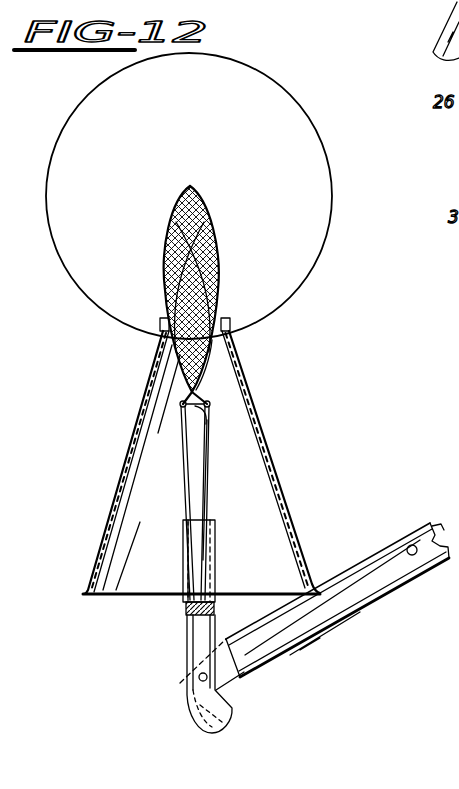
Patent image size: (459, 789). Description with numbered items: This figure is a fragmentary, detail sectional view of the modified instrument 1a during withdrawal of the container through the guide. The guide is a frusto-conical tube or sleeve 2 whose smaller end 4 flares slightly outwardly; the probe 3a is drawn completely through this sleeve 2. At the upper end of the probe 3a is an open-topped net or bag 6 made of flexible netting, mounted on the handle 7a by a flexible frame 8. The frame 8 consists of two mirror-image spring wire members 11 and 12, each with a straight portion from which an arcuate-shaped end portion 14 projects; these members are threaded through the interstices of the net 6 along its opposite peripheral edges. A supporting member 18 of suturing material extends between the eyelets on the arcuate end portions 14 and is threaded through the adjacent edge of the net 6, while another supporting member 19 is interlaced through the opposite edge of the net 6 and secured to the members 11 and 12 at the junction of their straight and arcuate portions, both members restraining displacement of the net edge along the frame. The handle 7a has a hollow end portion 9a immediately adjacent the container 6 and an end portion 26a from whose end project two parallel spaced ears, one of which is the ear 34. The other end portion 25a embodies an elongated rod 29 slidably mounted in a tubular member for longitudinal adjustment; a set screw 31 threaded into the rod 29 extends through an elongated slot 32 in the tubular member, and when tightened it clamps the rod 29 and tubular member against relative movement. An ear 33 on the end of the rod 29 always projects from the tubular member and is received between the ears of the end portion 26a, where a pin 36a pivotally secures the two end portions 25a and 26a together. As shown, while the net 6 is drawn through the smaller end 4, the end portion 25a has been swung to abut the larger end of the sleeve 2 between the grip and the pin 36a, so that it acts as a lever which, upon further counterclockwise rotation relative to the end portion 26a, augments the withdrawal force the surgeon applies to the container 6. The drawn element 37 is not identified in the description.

The instrument 1a is at (327, 462).
The sleeve 2 is at (262, 420).
The probe 3a is at (184, 566).
The smaller end 4 is at (228, 322).
The net or bag 6 is at (205, 303).
The handle 7a is at (370, 602).
The flexible frame 8 is at (215, 357).
The end portion 9a is at (216, 558).
The elongated member 11 is at (208, 472).
The elongated member 12 is at (187, 452).
The arcuate-shaped end portion 14 is at (165, 262).
The supporting member 18 is at (198, 191).
The supporting member 19 is at (206, 414).
The end portion 25a is at (338, 586).
The end portion 26a is at (187, 630).
The rod 29 is at (216, 598).
The set screw 31 is at (412, 556).
The elongated slot 32 is at (428, 543).
The ear 33 is at (226, 642).
The ear 34 is at (207, 725).
The pin 36a is at (199, 678).
The arm end cap 37 is at (230, 683).